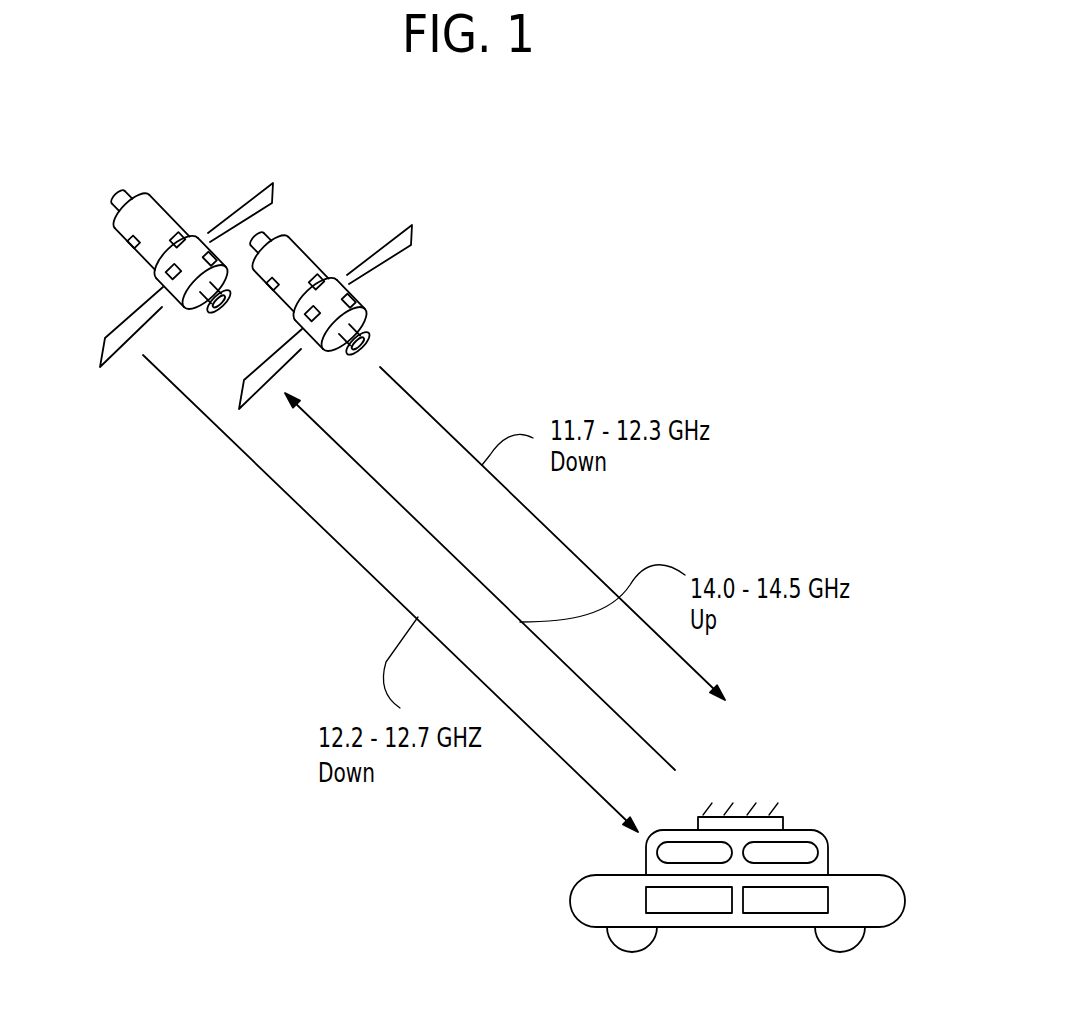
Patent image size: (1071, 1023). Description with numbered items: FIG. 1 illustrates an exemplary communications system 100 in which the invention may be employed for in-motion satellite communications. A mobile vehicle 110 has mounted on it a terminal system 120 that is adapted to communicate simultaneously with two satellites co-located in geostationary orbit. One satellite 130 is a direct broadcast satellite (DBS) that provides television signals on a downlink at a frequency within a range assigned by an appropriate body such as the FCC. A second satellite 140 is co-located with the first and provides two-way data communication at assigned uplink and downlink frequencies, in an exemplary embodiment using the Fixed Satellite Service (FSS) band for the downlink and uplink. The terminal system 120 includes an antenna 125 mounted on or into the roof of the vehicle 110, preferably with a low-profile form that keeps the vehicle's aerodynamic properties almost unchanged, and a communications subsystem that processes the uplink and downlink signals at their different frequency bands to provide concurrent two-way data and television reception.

The system 100 is at (780, 360).
The mobile vehicle 110 is at (862, 875).
The terminal system 120 is at (805, 828).
The antenna 125 is at (693, 822).
The satellite 130 is at (103, 363).
The second satellite 140 is at (398, 218).